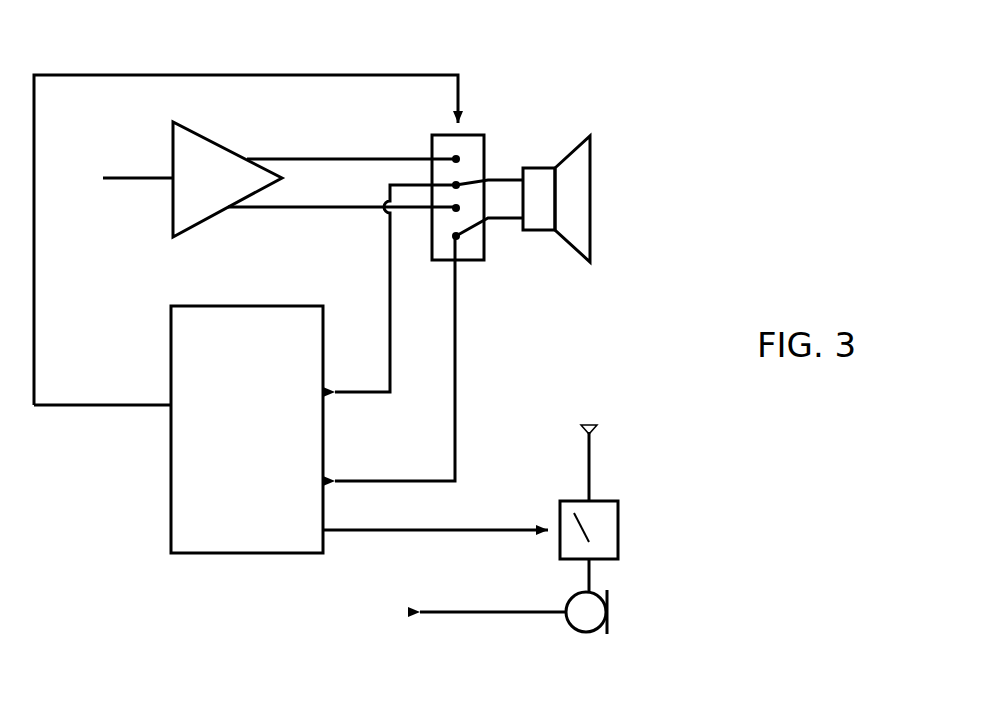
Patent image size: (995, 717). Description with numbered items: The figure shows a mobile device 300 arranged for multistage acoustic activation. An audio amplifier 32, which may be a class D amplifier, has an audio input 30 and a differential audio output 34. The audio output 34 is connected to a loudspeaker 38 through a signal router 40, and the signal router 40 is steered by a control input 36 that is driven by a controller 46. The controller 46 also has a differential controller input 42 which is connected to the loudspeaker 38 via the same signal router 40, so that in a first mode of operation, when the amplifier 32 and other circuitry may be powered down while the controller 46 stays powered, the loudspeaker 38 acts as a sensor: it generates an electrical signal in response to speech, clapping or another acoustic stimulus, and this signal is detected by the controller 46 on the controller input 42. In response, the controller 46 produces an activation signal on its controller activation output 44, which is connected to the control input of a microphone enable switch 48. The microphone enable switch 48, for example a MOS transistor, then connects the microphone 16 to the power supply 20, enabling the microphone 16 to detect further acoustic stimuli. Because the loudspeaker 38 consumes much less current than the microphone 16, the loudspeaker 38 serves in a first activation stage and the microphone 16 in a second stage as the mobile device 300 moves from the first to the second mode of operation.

The mobile device 300 is at (425, 698).
The audio input 30 is at (128, 177).
The audio amplifier 32 is at (205, 132).
The audio output 34 is at (365, 207).
The control input 36 is at (410, 68).
The loudspeaker 38 is at (572, 148).
The signal router 40 is at (475, 262).
The controller input 42 is at (390, 357).
The controller activation output 44 is at (390, 532).
The controller 46 is at (168, 382).
The microphone enable switch 48 is at (620, 530).
The power supply 20 is at (585, 425).
The microphone 16 is at (585, 632).